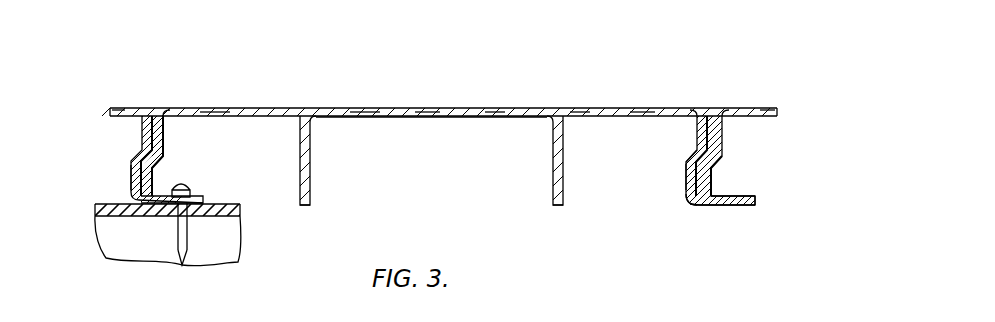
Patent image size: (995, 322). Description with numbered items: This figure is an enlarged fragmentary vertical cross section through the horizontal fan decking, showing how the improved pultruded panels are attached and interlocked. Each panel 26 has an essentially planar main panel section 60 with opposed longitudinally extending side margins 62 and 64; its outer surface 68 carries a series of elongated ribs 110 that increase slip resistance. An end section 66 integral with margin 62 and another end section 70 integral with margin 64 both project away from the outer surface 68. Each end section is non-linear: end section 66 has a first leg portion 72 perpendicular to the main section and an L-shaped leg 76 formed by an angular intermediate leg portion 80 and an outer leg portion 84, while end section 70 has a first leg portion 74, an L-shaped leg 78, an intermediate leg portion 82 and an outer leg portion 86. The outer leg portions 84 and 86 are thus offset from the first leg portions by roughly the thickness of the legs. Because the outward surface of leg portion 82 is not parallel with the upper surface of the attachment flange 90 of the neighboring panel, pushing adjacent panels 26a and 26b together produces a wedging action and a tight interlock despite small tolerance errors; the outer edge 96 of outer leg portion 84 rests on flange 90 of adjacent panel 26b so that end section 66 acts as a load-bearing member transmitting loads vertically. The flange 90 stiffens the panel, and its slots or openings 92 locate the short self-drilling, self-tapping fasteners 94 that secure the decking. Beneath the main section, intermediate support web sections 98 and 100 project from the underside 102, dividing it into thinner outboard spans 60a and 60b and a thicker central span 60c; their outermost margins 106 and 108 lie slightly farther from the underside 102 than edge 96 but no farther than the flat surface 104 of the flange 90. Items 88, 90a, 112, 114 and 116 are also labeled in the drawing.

The panel 26 is at (468, 103).
The adjacent panel 26a is at (745, 102).
The adjacent panel 26b is at (124, 103).
The main panel section 60 is at (495, 108).
The outermost span 60a is at (217, 110).
The outermost span 60b is at (643, 108).
The central span 60c is at (428, 113).
The side margin 62 is at (157, 108).
The side margin 64 is at (703, 108).
The end section 66 is at (186, 151).
The outer surface 68 is at (363, 108).
The end section 70 is at (680, 206).
The first leg portion 72 is at (160, 137).
The first leg portion 74 is at (697, 132).
The L-shaped leg 76 is at (170, 177).
The L-shaped leg 78 is at (671, 168).
The intermediate leg portion 80 is at (163, 163).
The intermediate leg portion 82 is at (697, 153).
The outer leg portion 84 is at (143, 203).
The outer leg portion 86 is at (687, 180).
The bottom portion 88 is at (685, 206).
The attachment flange 90 is at (203, 203).
The flange end 90a is at (755, 200).
The slot or opening 92 is at (737, 193).
The fastener 94 is at (168, 263).
The outer edge 96 is at (147, 205).
The intermediate support web section 98 is at (310, 145).
The intermediate support web section 100 is at (557, 133).
The underside 102 is at (392, 118).
The flat surface 104 is at (720, 207).
The outermost margin 106 is at (307, 207).
The outermost margin 108 is at (557, 207).
The elongated rib 110 is at (580, 108).
The fastener 112 is at (173, 200).
The fastener shank 114 is at (182, 240).
The fastener tip 116 is at (182, 253).